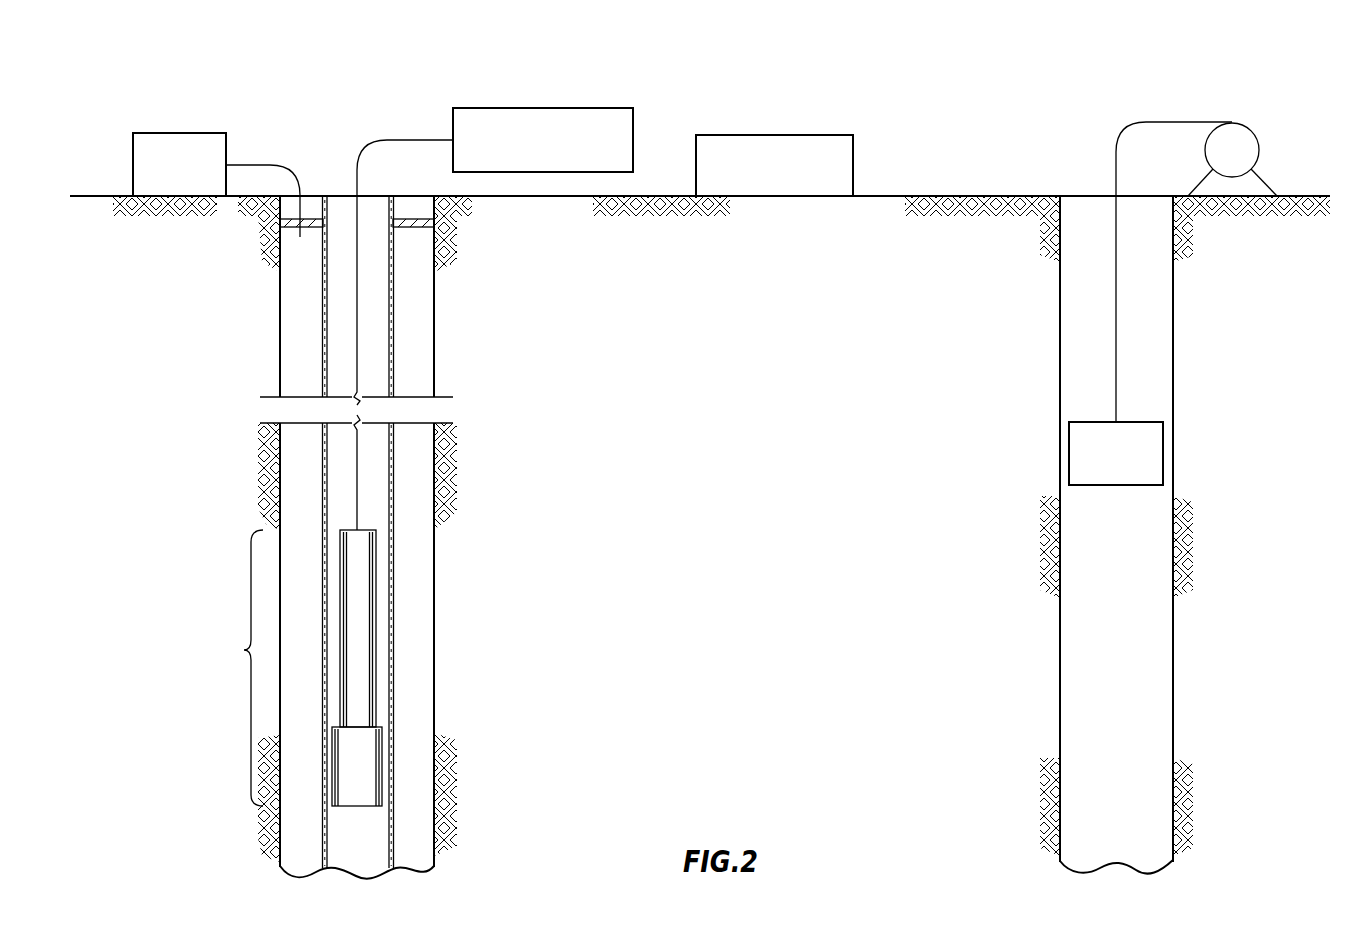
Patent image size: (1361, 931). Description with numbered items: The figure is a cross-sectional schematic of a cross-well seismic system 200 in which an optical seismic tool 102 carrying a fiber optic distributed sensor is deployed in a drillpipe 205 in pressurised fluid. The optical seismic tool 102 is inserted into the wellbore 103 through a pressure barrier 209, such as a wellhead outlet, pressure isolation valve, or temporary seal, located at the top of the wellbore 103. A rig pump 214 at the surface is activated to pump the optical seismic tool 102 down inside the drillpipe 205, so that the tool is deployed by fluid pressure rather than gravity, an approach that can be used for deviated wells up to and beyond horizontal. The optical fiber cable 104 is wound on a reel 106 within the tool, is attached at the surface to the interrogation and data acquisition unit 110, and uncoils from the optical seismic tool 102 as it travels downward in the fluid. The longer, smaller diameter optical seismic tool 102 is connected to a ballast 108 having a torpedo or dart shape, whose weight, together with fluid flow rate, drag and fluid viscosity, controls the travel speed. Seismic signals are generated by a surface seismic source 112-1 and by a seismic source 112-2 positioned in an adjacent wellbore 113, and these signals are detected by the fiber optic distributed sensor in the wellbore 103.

The cross-well seismic system 200 is at (1235, 63).
The optical seismic tool 102 is at (242, 650).
The wellbore 103 is at (440, 534).
The optical fiber cable 104 is at (362, 295).
The reel 106 is at (380, 615).
The ballast 108 is at (386, 765).
The interrogation and data acquisition unit 110 is at (566, 150).
The surface seismic source 112-1 is at (812, 180).
The seismic source 112-2 is at (1152, 468).
The adjacent wellbore 113 is at (1178, 632).
The drillpipe 205 is at (398, 563).
The pressure barrier 209 is at (452, 226).
The rig pump 214 is at (200, 178).